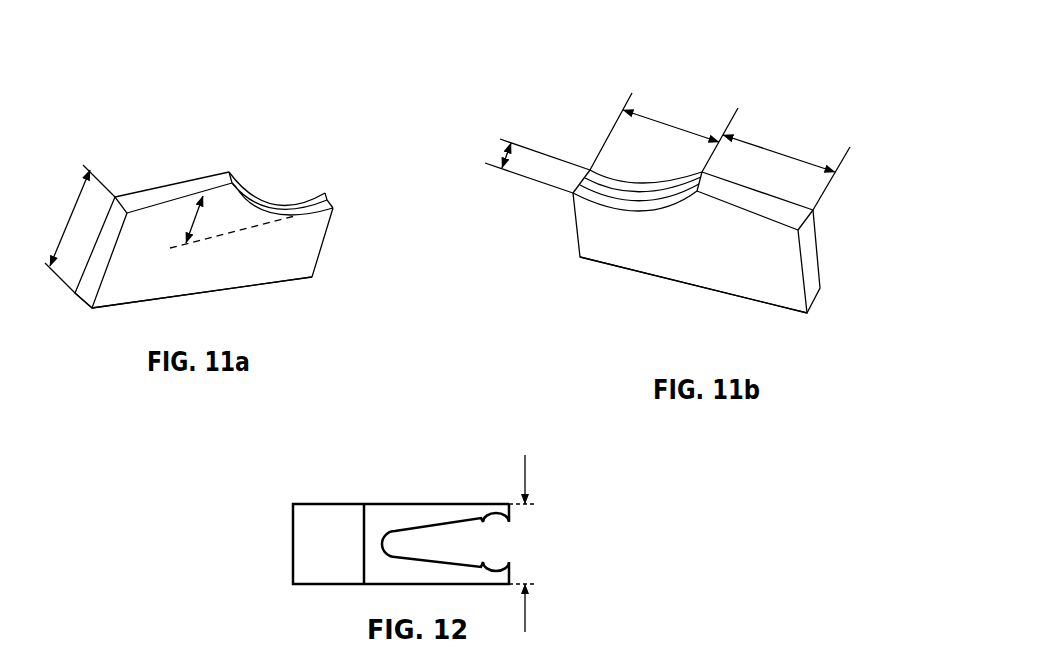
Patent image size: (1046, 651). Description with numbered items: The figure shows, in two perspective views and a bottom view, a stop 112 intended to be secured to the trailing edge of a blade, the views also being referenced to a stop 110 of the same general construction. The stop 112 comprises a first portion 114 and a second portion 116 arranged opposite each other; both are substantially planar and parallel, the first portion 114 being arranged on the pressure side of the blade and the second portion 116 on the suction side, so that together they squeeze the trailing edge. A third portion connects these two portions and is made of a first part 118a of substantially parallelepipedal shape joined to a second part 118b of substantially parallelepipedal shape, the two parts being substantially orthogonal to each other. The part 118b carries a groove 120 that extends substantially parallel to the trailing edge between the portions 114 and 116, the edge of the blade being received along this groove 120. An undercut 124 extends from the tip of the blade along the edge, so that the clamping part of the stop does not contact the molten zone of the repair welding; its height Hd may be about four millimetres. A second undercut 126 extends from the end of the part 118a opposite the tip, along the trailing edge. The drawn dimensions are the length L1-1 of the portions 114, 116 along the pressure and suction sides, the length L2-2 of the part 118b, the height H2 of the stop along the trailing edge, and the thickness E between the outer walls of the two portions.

In FIG. 11b, the stop 110 is at (847, 67).
In FIG. 11a, the stop 112 is at (307, 118).
In FIG. 11a, the first portion 114 is at (306, 246).
In FIG. 11b, the second portion 116 is at (606, 243).
In FIG. 11a, the first part of third portion 118a is at (100, 227).
In FIG. 11b, the first part of third portion 118a is at (811, 264).
In FIG. 11a, the second part of third portion 118b is at (182, 195).
In FIG. 11b, the second part of third portion 118b is at (778, 214).
In FIG. 11a, the groove 120 is at (233, 180).
In FIG. 11b, the groove 120 is at (700, 193).
In FIG. 11a, the undercut 124 is at (321, 182).
In FIG. 11b, the undercut 124 is at (630, 158).
In FIG. 11a, the second undercut 126 is at (114, 319).
In FIG. 11b, the second undercut 126 is at (774, 318).
In FIG. 11b, the thickness E is at (492, 159).
In FIG. 12, the thickness E is at (522, 533).
In FIG. 11a, the height H2 is at (68, 220).
In FIG. 11a, the height of undercut Hd is at (180, 232).
In FIG. 11b, the length L1-1 is at (665, 124).
In FIG. 11b, the length of third portion L2-2 is at (772, 150).